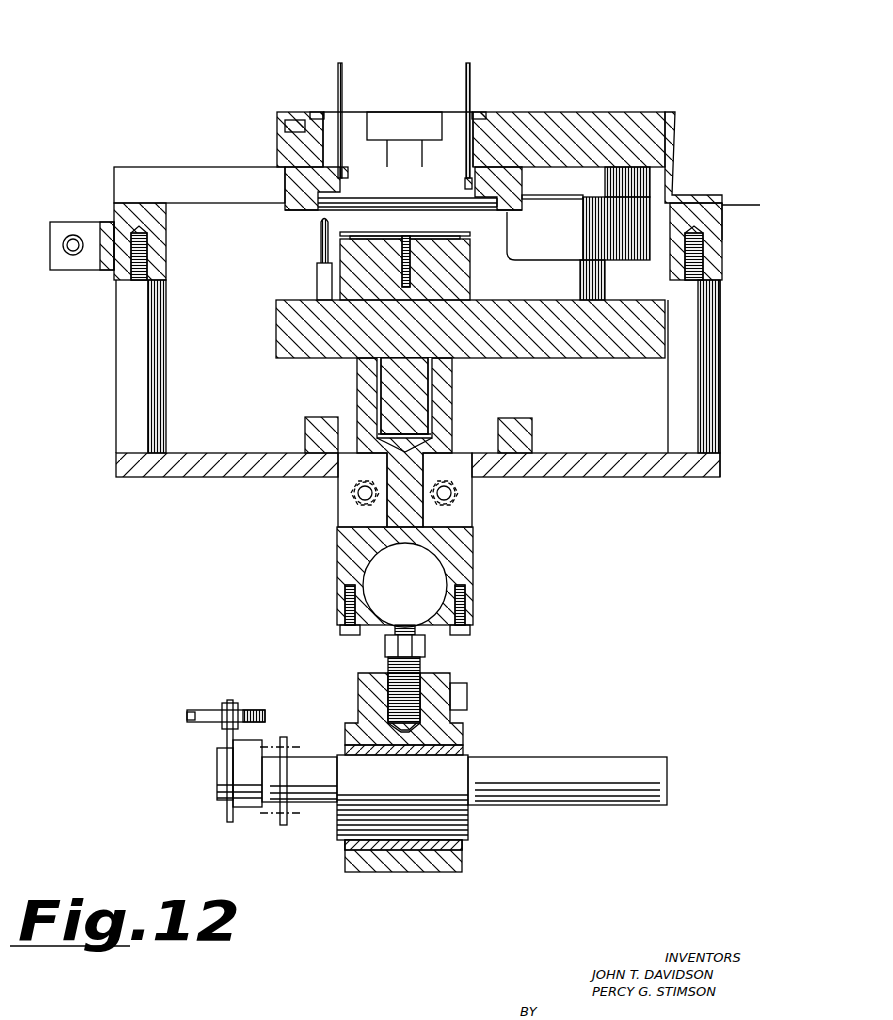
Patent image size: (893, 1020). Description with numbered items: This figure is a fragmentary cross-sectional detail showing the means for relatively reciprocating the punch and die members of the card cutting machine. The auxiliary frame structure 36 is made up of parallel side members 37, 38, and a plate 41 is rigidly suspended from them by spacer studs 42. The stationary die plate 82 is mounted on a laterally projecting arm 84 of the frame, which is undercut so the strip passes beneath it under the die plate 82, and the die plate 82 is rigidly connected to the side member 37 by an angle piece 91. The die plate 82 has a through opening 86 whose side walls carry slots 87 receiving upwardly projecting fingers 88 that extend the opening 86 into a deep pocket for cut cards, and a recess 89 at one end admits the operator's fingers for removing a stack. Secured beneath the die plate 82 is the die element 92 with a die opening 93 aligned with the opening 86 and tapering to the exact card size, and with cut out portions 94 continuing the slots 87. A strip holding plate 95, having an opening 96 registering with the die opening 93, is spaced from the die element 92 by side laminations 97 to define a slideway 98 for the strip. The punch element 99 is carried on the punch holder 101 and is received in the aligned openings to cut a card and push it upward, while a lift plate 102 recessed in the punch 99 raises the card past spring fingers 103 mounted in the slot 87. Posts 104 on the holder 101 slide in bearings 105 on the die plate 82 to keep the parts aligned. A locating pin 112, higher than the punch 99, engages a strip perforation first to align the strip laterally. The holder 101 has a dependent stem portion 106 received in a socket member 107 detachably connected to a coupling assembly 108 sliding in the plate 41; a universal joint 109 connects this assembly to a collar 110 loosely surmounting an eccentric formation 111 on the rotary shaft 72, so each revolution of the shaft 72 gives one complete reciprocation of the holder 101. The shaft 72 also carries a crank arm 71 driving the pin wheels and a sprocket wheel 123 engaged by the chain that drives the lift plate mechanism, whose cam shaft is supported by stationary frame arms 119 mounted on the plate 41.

The auxiliary frame structure 36 is at (109, 158).
The side member 37 is at (718, 272).
The side member 38 is at (118, 210).
The plate 41 is at (203, 478).
The spacer studs 42 is at (118, 436).
The crank arm 71 is at (232, 700).
The rotary shaft 72 is at (585, 760).
The die plate 82 is at (572, 112).
The arm 84 is at (152, 172).
The through opening 86 is at (355, 115).
The slots 87 is at (300, 135).
The fingers 88 is at (343, 73).
The recess 89 is at (403, 148).
The angle piece 91 is at (672, 166).
The die element 92 is at (290, 178).
The die opening 93 is at (520, 185).
The cut out portions 94 is at (322, 199).
The strip holding plate 95 is at (488, 212).
The opening 96 is at (468, 185).
The side laminations 97 is at (522, 194).
The slideway 98 is at (322, 203).
The punch element 99 is at (470, 289).
The punch holder 101 is at (280, 342).
The lift plate 102 is at (360, 236).
The spring fingers 103 is at (350, 172).
The posts 104 is at (592, 286).
The bearings 105 is at (547, 248).
The stem portion 106 is at (440, 399).
The socket member 107 is at (449, 416).
The coupling assembly 108 is at (470, 540).
The universal joint 109 is at (425, 615).
The collar 110 is at (455, 732).
The eccentric formation 111 is at (468, 826).
The locating pin 112 is at (320, 248).
The frame arms 119 is at (532, 430).
The sprocket wheel 123 is at (283, 826).